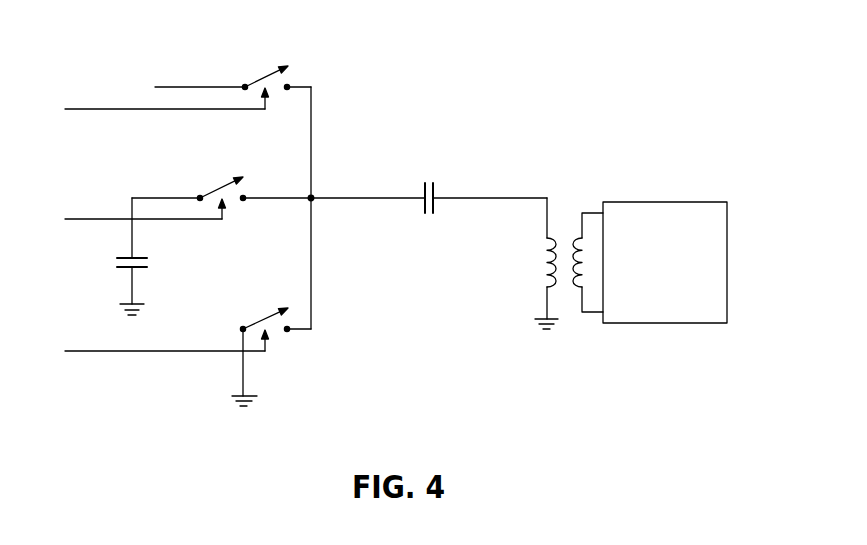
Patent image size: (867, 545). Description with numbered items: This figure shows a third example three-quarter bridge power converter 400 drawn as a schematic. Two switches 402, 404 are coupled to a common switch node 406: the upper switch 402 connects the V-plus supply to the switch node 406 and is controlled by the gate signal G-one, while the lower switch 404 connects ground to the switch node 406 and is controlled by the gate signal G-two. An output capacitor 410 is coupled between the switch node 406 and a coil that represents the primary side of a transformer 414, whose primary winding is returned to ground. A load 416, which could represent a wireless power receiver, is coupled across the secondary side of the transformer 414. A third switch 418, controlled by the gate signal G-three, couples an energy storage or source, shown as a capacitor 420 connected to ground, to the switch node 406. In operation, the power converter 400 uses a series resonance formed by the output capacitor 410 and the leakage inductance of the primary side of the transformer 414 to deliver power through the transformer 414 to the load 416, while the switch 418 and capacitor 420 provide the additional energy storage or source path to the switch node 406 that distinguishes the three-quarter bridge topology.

The three-quarter bridge power converter 400 is at (642, 78).
The switch 402 is at (262, 75).
The switch 404 is at (263, 316).
The switch node 406 is at (313, 202).
The output capacitor 410 is at (437, 193).
The transformer 414 is at (566, 216).
The load 416 is at (673, 202).
The switch 418 is at (217, 187).
The capacitor 420 is at (142, 268).